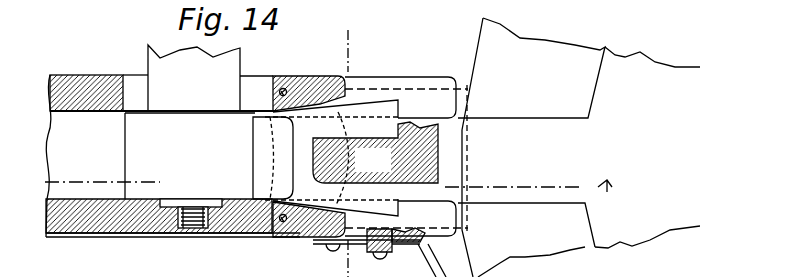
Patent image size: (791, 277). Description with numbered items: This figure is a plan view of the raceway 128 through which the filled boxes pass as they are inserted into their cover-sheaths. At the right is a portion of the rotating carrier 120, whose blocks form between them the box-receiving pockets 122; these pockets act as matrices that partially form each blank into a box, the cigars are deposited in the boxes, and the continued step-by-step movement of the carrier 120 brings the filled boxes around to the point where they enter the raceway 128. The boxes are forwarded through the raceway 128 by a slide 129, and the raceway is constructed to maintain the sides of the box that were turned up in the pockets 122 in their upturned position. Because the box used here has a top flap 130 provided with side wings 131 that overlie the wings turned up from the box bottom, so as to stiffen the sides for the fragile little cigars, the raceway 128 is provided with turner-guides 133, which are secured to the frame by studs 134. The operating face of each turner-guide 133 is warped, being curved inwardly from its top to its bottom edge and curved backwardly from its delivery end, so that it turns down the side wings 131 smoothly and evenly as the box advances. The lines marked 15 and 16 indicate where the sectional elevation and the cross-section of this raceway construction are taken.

The section line 15 15 is at (327, 183).
The section line 16 16 is at (362, 149).
The rotating carrier 120 is at (647, 147).
The box-receiving pockets 122 is at (531, 147).
The raceway 128 is at (173, 141).
The slide 129 is at (375, 152).
The top flap 130 is at (332, 158).
The side wings 131 is at (386, 103).
The turner-guides 133 is at (321, 106).
The studs 134 is at (284, 89).